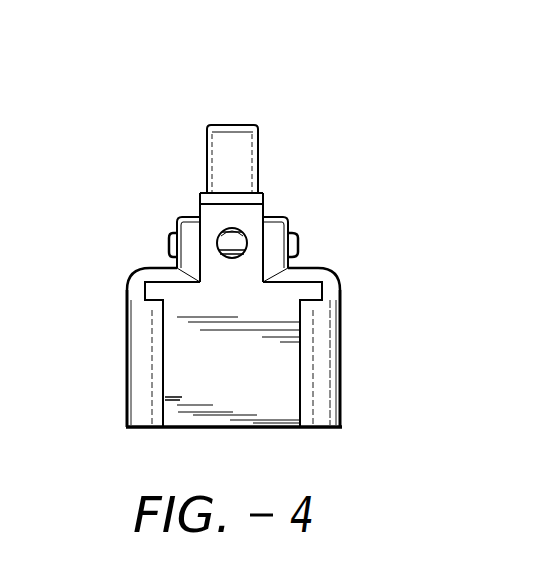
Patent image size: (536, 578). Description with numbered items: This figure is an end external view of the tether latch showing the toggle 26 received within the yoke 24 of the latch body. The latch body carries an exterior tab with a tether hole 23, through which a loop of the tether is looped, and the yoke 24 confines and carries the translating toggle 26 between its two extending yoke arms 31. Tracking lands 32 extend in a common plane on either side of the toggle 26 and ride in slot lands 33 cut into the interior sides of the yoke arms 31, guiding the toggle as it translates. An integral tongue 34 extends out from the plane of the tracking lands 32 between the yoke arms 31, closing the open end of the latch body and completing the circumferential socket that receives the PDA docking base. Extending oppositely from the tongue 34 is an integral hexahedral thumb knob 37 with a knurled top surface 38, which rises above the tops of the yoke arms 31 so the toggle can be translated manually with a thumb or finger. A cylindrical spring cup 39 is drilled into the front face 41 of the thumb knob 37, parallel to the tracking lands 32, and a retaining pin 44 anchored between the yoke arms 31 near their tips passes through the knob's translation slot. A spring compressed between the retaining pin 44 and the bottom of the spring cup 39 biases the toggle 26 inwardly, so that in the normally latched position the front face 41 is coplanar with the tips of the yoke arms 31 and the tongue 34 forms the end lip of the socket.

The tether hole 23 is at (127, 323).
The yoke 24 is at (362, 229).
The toggle 26 is at (273, 412).
The yoke arms 31 is at (177, 223).
The tracking lands 32 is at (289, 302).
The slot lands 33 is at (147, 289).
The tongue 34 is at (208, 377).
The thumb knob 37 is at (198, 197).
The knurled top surface 38 is at (257, 180).
The spring cup 39 is at (245, 258).
The front face 41 is at (227, 215).
The retaining pin 44 is at (168, 243).